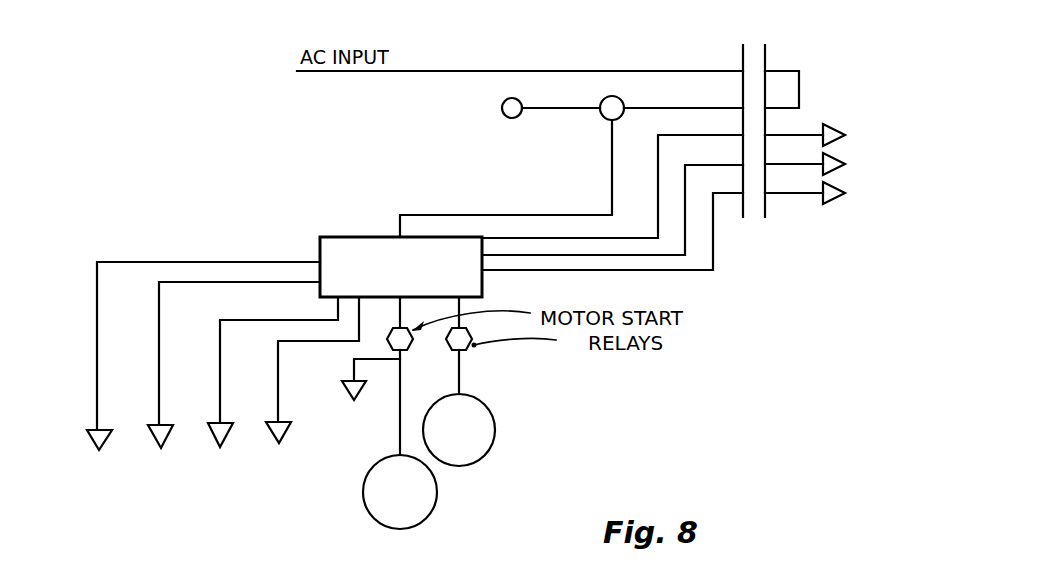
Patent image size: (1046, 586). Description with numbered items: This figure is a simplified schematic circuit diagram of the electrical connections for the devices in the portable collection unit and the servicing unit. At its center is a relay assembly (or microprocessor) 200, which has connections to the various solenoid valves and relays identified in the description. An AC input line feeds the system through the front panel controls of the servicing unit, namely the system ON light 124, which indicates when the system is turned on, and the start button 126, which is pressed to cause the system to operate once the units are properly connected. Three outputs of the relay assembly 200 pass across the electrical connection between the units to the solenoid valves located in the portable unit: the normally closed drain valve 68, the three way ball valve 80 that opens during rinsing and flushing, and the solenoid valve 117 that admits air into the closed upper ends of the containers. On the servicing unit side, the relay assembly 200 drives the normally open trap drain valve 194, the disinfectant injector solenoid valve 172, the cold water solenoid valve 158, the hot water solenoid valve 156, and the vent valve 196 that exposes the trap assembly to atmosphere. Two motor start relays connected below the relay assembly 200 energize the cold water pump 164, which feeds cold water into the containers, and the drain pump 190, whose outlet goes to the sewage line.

The solenoid operated drain valve 68 is at (836, 128).
The three way ball valve 80 is at (839, 160).
The solenoid valve 117 is at (839, 190).
The system ON light 124 is at (503, 108).
The start button 126 is at (622, 100).
The relay assembly 200 is at (330, 236).
The solenoid valve 194 is at (91, 437).
The solenoid valve 172 is at (158, 437).
The solenoid valve 158 is at (214, 437).
The solenoid valve 156 is at (285, 432).
The valve 196 is at (360, 400).
The water pump 164 is at (495, 428).
The drain pump 190 is at (427, 519).